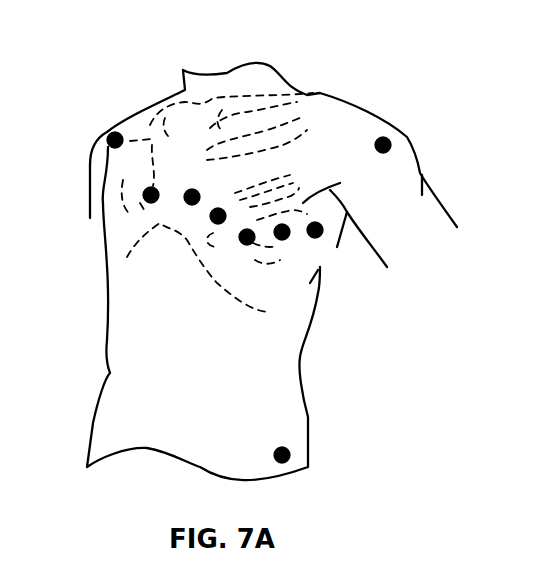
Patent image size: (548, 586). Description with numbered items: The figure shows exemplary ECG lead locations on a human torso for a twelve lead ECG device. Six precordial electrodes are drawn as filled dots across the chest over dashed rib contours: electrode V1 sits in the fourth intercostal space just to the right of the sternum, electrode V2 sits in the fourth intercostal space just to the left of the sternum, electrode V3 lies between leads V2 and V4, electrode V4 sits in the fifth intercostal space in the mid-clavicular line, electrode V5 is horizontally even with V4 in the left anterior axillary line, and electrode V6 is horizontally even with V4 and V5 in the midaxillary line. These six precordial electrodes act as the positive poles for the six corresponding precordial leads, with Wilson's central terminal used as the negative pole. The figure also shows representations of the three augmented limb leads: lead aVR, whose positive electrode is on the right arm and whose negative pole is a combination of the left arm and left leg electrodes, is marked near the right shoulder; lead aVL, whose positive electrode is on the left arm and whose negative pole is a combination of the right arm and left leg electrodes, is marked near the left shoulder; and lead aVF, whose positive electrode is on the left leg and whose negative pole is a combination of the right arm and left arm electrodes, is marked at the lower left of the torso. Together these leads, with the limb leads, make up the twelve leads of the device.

The augmented vector right lead aVR is at (86, 125).
The augmented vector left lead aVL is at (417, 133).
The augmented vector foot lead aVF is at (320, 443).
The precordial electrode V1 is at (148, 188).
The precordial electrode V2 is at (204, 185).
The precordial electrode V3 is at (207, 207).
The precordial electrode V4 is at (235, 228).
The precordial electrode V5 is at (277, 238).
The precordial electrode V6 is at (316, 238).